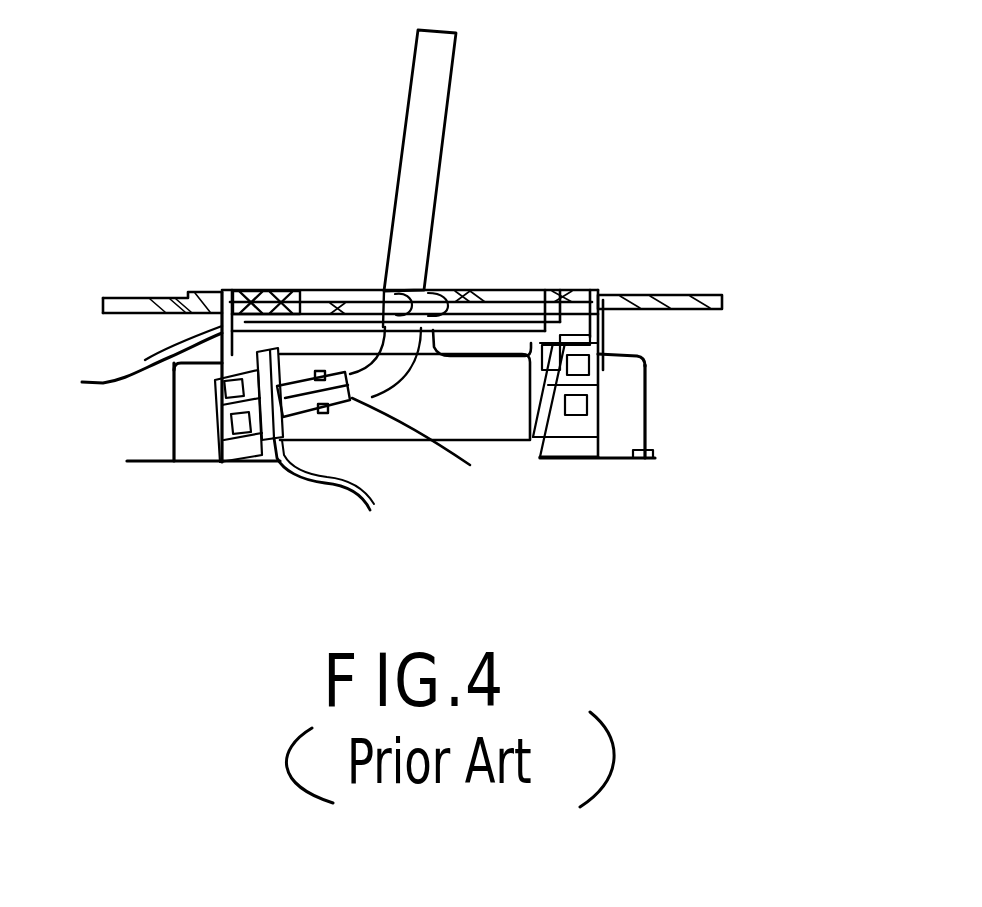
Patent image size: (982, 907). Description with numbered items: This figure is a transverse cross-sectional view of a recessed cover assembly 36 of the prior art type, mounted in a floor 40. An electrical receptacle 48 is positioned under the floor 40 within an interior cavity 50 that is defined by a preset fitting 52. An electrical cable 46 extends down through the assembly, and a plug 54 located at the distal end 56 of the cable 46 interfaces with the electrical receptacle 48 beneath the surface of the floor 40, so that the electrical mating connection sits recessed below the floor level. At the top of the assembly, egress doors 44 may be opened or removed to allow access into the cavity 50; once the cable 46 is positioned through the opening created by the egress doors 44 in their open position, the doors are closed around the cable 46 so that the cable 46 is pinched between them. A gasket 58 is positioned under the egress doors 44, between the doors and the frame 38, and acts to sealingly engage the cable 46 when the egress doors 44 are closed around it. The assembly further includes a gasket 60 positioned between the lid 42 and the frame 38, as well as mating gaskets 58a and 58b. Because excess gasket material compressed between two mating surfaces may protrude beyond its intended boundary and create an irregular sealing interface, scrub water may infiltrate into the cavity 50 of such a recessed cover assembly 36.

The recessed cover assembly 36 is at (590, 152).
The frame 38 is at (212, 283).
The floor 40 is at (713, 295).
The lid 42 is at (292, 291).
The egress doors 44 is at (418, 291).
The electrical cable 46 is at (447, 95).
The electrical receptacle 48 is at (314, 455).
The interior cavity 50 is at (466, 424).
The preset fitting 52 is at (158, 463).
The plug 54 is at (328, 422).
The distal end 56 is at (470, 465).
The gasket 58 is at (480, 353).
The mating gasket 58a is at (470, 320).
The mating gasket 58b is at (376, 300).
The gasket 60 is at (129, 364).